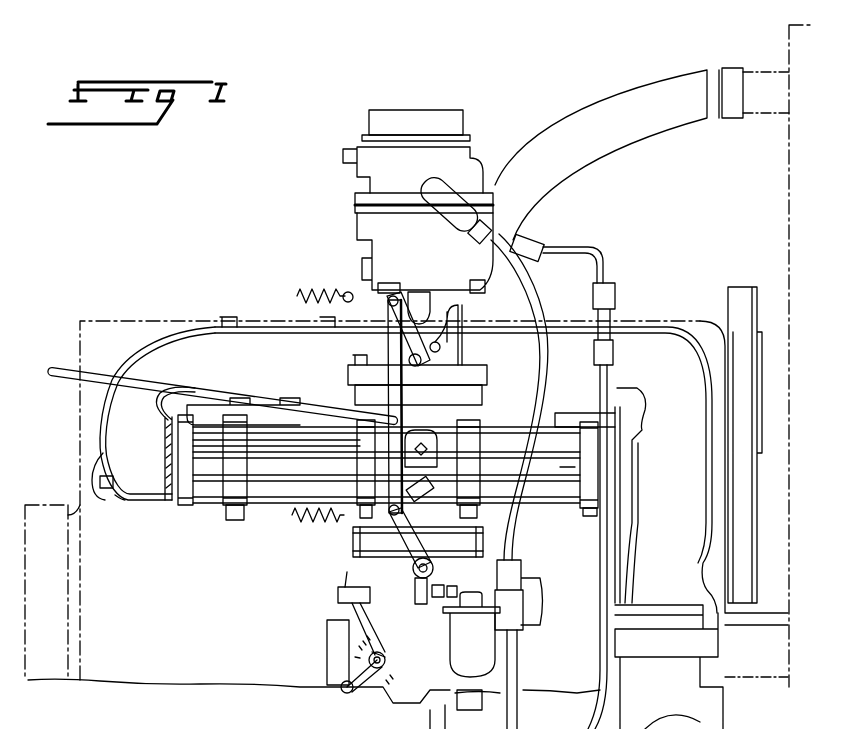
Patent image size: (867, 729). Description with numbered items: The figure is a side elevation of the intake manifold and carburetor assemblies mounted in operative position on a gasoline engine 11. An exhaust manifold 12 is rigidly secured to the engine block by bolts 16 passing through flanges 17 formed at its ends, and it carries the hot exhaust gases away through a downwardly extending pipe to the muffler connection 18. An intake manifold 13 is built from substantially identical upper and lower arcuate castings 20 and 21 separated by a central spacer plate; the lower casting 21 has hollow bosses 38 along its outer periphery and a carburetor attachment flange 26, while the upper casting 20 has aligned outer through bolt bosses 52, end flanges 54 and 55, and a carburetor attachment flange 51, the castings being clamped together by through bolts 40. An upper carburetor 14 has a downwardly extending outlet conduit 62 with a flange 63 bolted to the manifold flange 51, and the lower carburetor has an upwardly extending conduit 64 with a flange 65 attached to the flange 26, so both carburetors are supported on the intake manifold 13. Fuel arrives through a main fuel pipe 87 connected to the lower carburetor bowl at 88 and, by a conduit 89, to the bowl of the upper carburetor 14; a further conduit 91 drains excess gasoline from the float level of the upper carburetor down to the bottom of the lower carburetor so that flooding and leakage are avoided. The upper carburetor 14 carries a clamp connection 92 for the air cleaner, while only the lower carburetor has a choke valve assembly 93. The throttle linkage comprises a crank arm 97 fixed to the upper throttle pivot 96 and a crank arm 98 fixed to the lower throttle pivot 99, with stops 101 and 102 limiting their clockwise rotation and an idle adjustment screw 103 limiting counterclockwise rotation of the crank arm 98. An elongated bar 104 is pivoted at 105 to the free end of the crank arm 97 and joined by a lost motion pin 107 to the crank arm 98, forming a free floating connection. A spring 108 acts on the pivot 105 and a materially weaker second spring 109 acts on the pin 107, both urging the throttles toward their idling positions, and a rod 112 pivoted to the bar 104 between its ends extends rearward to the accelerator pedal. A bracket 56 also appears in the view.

The gasoline engine 11 is at (155, 311).
The exhaust manifold 12 is at (250, 325).
The intake manifold 13 is at (285, 501).
The upper carburetor 14 is at (494, 161).
The bolts 16 is at (100, 487).
The flanges 17 is at (115, 498).
The muffler connection 18 is at (720, 700).
The upper casting 20 is at (290, 462).
The lower casting 21 is at (198, 495).
The carburetor attachment flange 26 is at (352, 538).
The hollow bosses 38 is at (225, 500).
The through bolts 40 is at (233, 512).
The carburetor attachment flange 51 is at (482, 392).
The outer through bolt bosses 52 is at (255, 439).
The end flange 54 is at (215, 402).
The end flange 55 is at (558, 420).
The bracket 56 is at (562, 467).
The outlet conduit 62 is at (458, 345).
The flange 63 is at (488, 372).
The conduit 64 is at (395, 570).
The flange 65 is at (345, 560).
The main fuel pipe 87 is at (519, 712).
The bowl connection 88 is at (524, 585).
The conduit 89 is at (537, 295).
The conduit 91 is at (610, 270).
The clamp connection 92 is at (397, 115).
The choke valve assembly 93 is at (360, 620).
The pivot 96 is at (422, 364).
The crank arm 97 is at (419, 308).
The crank arm 98 is at (420, 535).
The pivot 99 is at (408, 572).
The stop 101 is at (443, 332).
The stop 102 is at (464, 551).
The idle adjustment screw 103 is at (452, 580).
The elongated bar 104 is at (402, 398).
The pivot 105 is at (395, 292).
The pin 107 is at (399, 512).
The spring 108 is at (315, 290).
The second spring 109 is at (292, 522).
The rod 112 is at (140, 380).